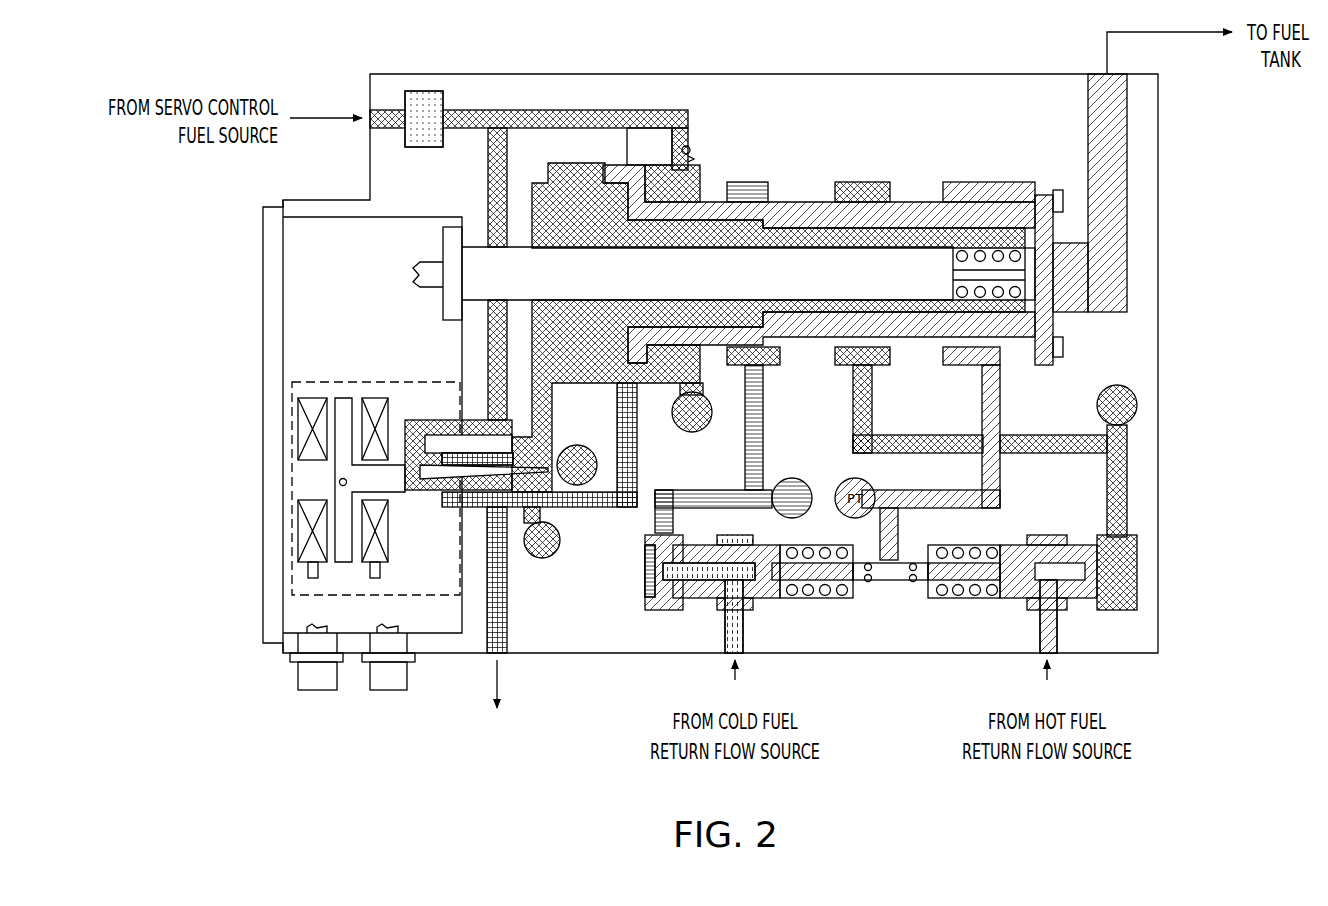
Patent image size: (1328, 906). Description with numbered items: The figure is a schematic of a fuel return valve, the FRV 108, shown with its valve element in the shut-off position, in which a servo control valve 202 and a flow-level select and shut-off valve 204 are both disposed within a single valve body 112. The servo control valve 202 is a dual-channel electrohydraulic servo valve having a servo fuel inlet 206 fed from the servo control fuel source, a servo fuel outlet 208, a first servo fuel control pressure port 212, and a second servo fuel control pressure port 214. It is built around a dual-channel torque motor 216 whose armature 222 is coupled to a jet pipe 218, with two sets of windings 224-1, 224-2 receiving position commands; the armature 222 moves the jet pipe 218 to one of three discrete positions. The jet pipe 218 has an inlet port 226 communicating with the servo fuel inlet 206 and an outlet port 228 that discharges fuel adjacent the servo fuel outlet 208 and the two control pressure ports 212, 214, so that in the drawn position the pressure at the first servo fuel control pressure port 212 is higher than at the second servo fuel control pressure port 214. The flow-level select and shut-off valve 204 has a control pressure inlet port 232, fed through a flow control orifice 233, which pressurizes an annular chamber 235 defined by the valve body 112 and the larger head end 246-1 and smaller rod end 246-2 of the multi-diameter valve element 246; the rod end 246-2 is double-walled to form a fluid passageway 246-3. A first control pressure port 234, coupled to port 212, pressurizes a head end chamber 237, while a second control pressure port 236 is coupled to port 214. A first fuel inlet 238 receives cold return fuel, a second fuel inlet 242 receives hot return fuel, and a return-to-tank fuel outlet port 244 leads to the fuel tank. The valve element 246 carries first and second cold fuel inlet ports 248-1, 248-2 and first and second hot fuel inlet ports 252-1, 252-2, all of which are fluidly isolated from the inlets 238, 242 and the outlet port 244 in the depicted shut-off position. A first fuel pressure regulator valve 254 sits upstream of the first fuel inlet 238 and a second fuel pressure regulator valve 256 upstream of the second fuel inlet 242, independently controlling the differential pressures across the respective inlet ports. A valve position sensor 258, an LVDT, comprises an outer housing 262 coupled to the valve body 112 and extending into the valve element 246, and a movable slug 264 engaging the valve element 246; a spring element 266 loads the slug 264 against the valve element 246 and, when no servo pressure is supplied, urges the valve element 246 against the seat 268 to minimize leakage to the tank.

The fuel return valve (FRV) 108 is at (336, 62).
The valve body 112 is at (1022, 74).
The servo control valve 202 is at (323, 473).
The flow-level select and shut-off valve 204 is at (920, 172).
The servo fuel inlet 206 is at (492, 355).
The servo fuel outlet 208 is at (503, 626).
The first servo fuel control pressure port 212 is at (522, 468).
The second servo fuel control pressure port 214 is at (533, 497).
The dual-channel torque motor 216 is at (293, 574).
The jet pipe 218 is at (455, 482).
The armature 222 is at (343, 402).
The first set of windings 224-1 is at (298, 432).
The second set of windings 224-2 is at (378, 398).
The inlet port 226 is at (418, 468).
The outlet port 228 is at (497, 475).
The control pressure inlet port 232 is at (690, 160).
The flow control orifice 233 is at (690, 150).
The first control pressure port 234 is at (548, 386).
The annular chamber 235 is at (666, 185).
The second control pressure port 236 is at (643, 447).
The head end chamber 237 is at (535, 201).
The first fuel inlet 238 is at (757, 393).
The second fuel inlet 242 is at (871, 393).
The return-to-tank fuel outlet port 244 is at (1099, 304).
The valve element 246 is at (885, 200).
The head end 246-1 is at (613, 165).
The rod end 246-2 is at (1053, 275).
The fluid passageway 246-3 is at (809, 217).
The first cold fuel inlet port 248-1 is at (790, 345).
The second cold fuel inlet port 248-2 is at (818, 345).
The first hot fuel inlet port 252-1 is at (900, 345).
The second hot fuel inlet port 252-2 is at (938, 345).
The first fuel pressure regulator valve 254 is at (787, 609).
The second fuel pressure regulator valve 256 is at (997, 609).
The valve position sensor 258 is at (440, 241).
The outer housing 262 is at (517, 287).
The movable slug 264 is at (970, 268).
The spring element 266 is at (998, 300).
The seat 268 is at (1063, 200).